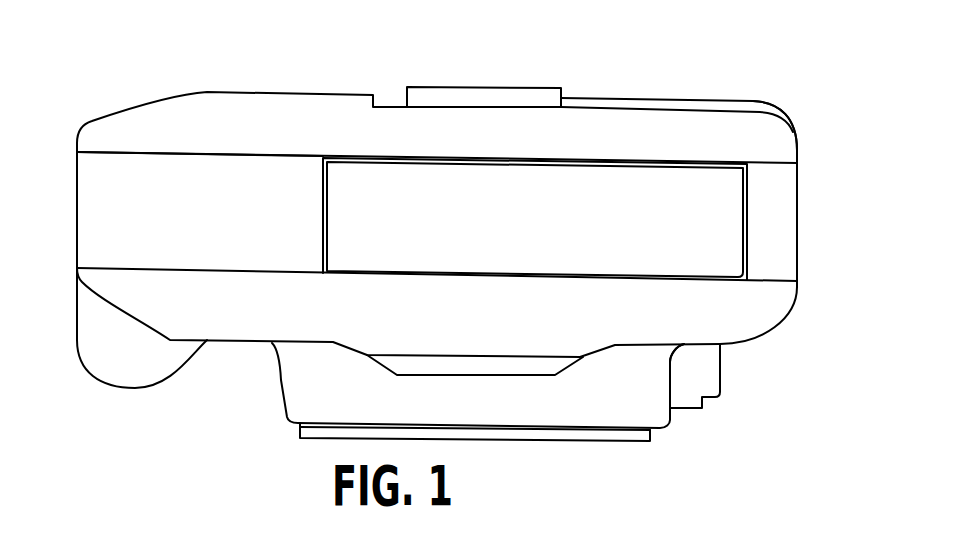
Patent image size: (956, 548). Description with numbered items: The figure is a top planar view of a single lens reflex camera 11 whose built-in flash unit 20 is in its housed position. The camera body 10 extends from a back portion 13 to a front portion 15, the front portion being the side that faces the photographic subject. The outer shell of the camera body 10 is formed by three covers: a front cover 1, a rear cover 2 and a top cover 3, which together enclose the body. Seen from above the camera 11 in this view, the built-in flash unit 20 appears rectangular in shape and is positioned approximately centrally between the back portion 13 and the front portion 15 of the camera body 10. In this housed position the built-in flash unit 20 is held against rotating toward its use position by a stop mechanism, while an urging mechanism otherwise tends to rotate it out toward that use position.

The front cover 1 is at (242, 322).
The rear cover 2 is at (268, 100).
The top cover 3 is at (111, 215).
The camera body 10 is at (797, 150).
The single lens reflex camera 11 is at (665, 72).
The back portion 13 is at (590, 98).
The front portion 15 is at (657, 344).
The built-in flash unit 20 is at (730, 236).